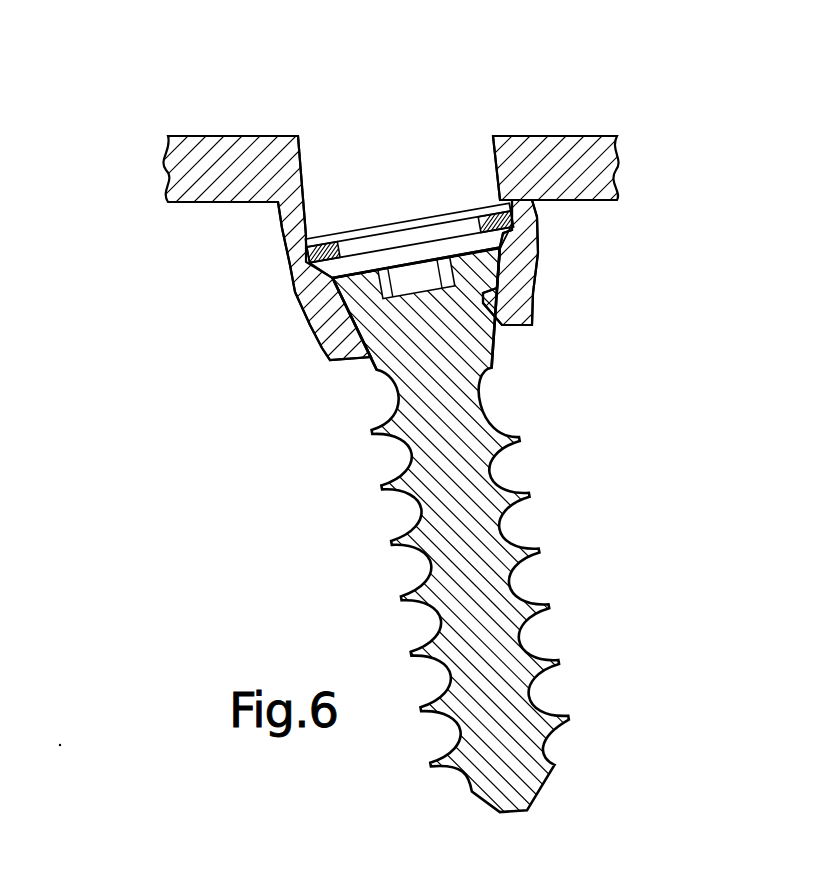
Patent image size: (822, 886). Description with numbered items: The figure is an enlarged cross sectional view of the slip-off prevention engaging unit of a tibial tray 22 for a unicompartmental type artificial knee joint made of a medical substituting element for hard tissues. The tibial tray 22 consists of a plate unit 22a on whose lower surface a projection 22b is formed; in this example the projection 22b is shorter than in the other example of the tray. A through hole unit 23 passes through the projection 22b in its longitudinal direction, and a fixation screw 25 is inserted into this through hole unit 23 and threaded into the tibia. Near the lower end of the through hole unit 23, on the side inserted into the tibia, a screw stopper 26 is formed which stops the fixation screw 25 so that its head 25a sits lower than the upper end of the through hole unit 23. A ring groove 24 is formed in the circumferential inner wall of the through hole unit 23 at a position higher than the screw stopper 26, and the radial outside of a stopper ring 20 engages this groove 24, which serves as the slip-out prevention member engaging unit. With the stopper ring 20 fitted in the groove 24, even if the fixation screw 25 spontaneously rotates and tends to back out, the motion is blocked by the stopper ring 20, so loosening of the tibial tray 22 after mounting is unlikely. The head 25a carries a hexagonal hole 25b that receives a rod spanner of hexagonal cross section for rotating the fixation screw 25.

The tibial tray 22 is at (205, 75).
The plate unit 22a is at (557, 140).
The projection 22b is at (292, 282).
The through hole unit 23 is at (333, 145).
The stopper ring 20 is at (413, 230).
The ring groove 24 is at (442, 210).
The screw stopper 26 is at (513, 260).
The fixation screw 25 is at (497, 367).
The head 25a is at (355, 296).
The hexagonal hole 25b is at (415, 286).